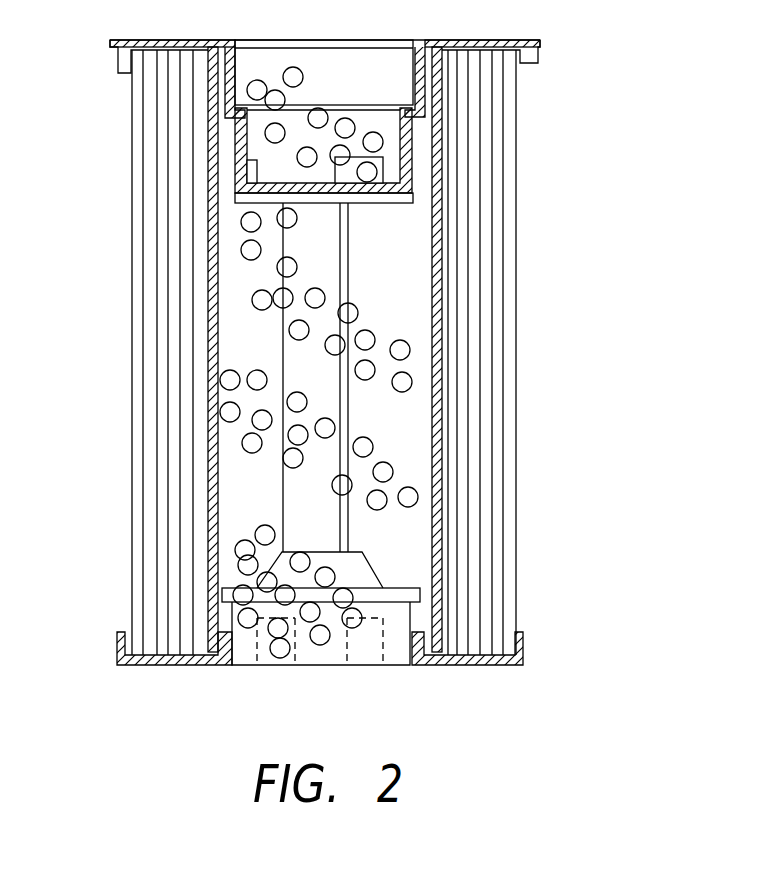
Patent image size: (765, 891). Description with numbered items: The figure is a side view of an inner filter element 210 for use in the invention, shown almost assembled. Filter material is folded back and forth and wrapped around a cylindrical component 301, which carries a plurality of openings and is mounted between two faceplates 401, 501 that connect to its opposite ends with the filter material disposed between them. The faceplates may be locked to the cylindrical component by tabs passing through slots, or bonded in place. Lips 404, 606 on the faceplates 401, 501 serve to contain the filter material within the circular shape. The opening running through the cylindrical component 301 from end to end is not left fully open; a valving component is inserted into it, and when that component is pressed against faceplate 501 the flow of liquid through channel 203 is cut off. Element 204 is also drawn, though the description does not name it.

The channel 203 is at (368, 40).
The lower cartridge housing / bottom box 204 is at (360, 665).
The cylindrical component 301 is at (206, 305).
The filter element 210 is at (520, 319).
The faceplate 501 is at (118, 50).
The lip 606 is at (530, 62).
The faceplate 401 is at (118, 643).
The lip 404 is at (525, 648).